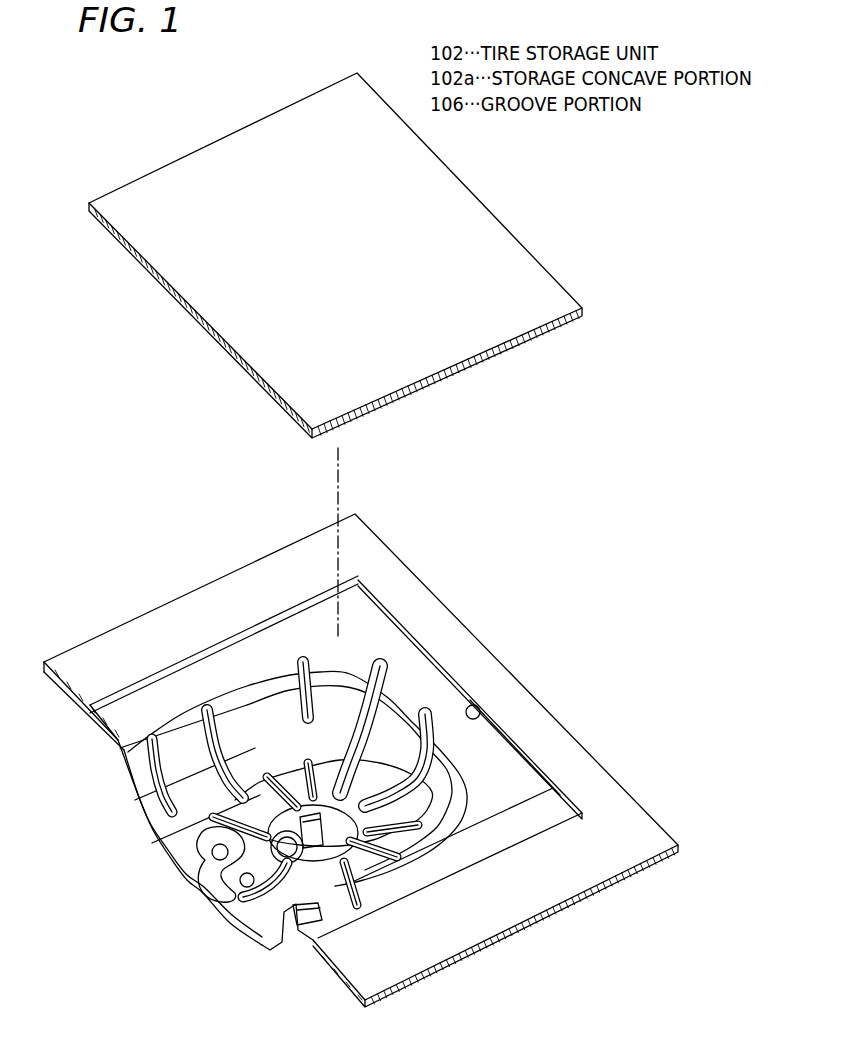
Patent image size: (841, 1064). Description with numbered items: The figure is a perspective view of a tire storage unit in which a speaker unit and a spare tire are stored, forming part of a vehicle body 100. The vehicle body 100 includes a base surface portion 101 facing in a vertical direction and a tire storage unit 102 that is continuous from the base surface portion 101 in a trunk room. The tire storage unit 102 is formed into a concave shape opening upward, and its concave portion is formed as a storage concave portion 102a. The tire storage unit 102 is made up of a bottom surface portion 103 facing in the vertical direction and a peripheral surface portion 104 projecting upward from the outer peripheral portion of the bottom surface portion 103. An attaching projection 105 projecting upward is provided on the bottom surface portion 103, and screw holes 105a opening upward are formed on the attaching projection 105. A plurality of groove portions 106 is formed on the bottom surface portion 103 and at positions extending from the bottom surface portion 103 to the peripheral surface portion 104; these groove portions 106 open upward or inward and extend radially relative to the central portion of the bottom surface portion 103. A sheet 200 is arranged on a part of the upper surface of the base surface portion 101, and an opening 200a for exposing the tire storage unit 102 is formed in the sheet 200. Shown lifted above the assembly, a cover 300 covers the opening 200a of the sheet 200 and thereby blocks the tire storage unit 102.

The vehicle body 100 is at (583, 748).
The base surface portion 101 is at (600, 767).
The tire storage unit 102 is at (327, 769).
The storage concave portion 102a is at (235, 717).
The bottom surface portion 103 is at (193, 868).
The peripheral surface portion 104 is at (177, 743).
The attaching projection 105 is at (197, 837).
The screw hole 105a is at (207, 848).
The groove portion 106 is at (305, 667).
The sheet 200 is at (543, 895).
The opening 200a is at (478, 716).
The cover 300 is at (498, 323).